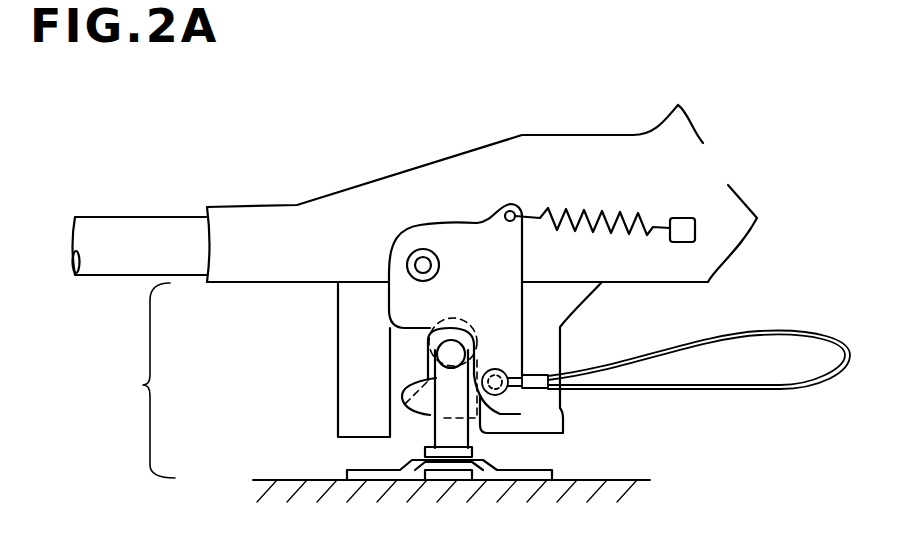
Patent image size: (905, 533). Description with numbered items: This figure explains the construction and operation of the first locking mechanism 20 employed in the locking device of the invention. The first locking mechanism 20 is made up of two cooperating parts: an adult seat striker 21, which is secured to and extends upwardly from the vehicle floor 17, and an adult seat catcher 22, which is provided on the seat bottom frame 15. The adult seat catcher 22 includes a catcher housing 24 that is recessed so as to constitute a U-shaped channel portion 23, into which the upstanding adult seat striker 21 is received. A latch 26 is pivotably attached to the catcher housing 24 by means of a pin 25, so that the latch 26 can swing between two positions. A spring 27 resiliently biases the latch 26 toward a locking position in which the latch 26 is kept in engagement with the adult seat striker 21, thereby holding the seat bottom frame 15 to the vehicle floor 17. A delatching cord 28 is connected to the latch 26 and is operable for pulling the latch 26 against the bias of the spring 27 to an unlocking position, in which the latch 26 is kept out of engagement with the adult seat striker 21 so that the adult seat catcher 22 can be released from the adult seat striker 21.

The seat bottom frame 15 is at (258, 205).
The vehicle floor 17 is at (287, 480).
The first locking mechanism 20 is at (143, 385).
The adult seat striker 21 is at (433, 428).
The adult seat catcher 22 is at (303, 348).
The U-shaped channel portion 23 is at (440, 352).
The catcher housing 24 is at (565, 422).
The pin 25 is at (413, 252).
The latch 26 is at (548, 333).
The spring 27 is at (597, 213).
The delatching cord 28 is at (783, 389).